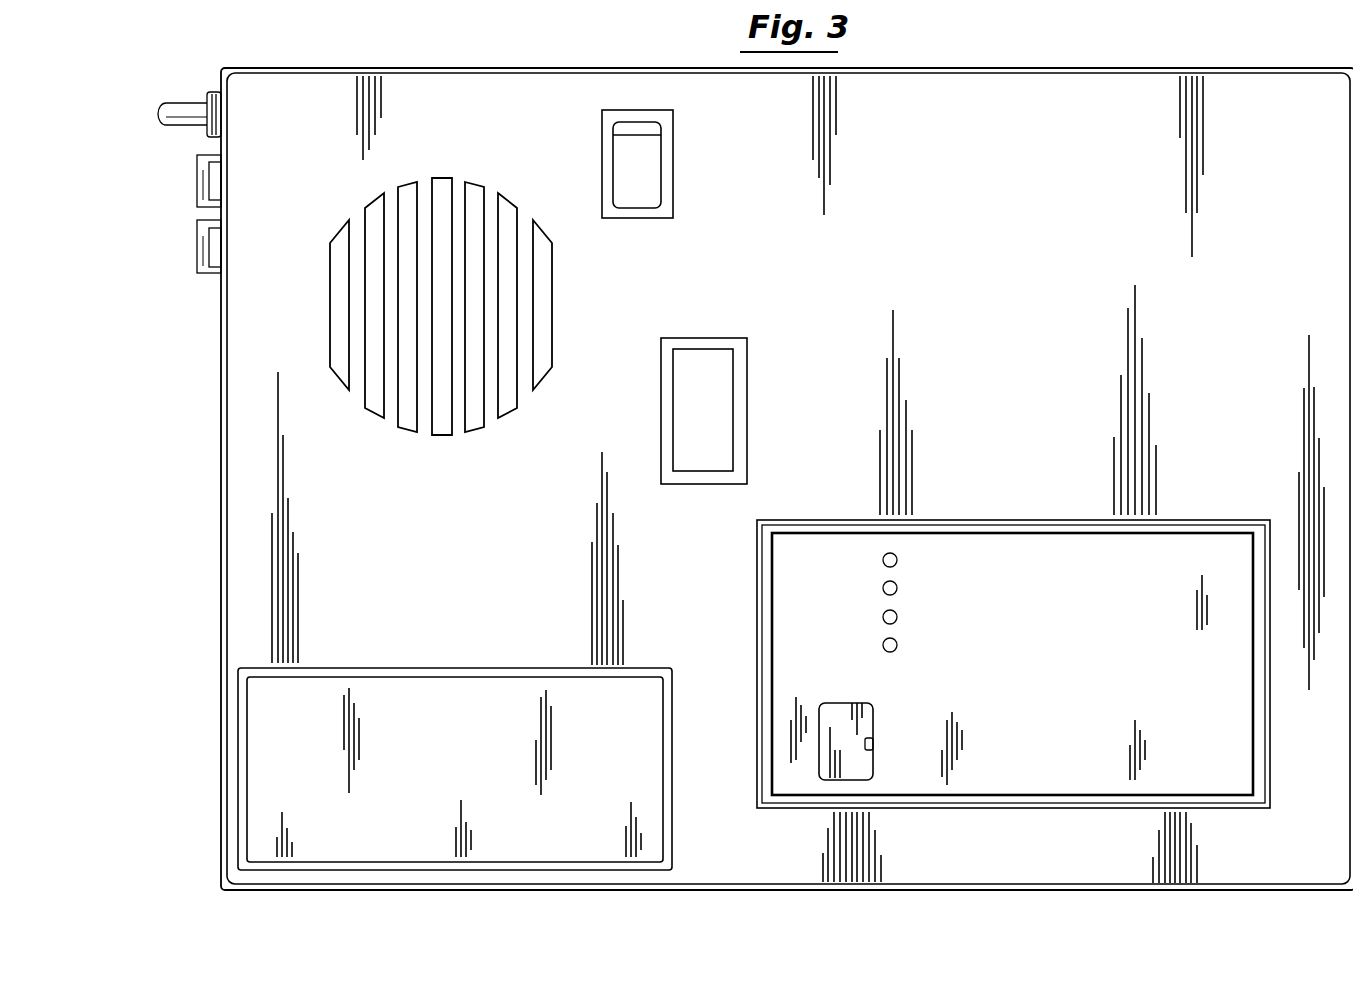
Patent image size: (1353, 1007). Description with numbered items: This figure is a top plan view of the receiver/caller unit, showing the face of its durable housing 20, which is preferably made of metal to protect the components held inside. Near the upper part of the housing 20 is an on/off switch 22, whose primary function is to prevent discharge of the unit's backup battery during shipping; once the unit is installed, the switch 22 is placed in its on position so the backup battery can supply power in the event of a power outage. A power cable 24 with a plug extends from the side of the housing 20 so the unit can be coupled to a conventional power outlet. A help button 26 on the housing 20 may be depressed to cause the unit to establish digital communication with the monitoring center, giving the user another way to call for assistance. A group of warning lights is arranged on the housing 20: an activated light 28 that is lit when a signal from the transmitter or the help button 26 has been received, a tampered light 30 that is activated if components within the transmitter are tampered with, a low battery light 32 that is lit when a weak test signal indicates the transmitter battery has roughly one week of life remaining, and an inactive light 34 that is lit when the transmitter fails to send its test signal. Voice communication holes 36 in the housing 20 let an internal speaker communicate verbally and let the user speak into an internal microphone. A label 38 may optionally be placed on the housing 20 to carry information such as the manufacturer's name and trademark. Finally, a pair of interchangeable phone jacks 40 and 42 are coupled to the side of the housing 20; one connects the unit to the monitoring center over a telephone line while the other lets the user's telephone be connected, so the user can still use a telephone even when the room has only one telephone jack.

The housing 20 is at (990, 122).
The on/off switch 22 is at (661, 168).
The power cable 24 is at (180, 105).
The help button 26 is at (725, 397).
The activated light 28 is at (883, 560).
The tampered light 30 is at (883, 588).
The low battery light 32 is at (883, 617).
The inactive light 34 is at (883, 645).
The voice communication holes 36 is at (472, 189).
The label 38 is at (435, 685).
The phone jack 40 is at (197, 178).
The phone jack 42 is at (197, 240).